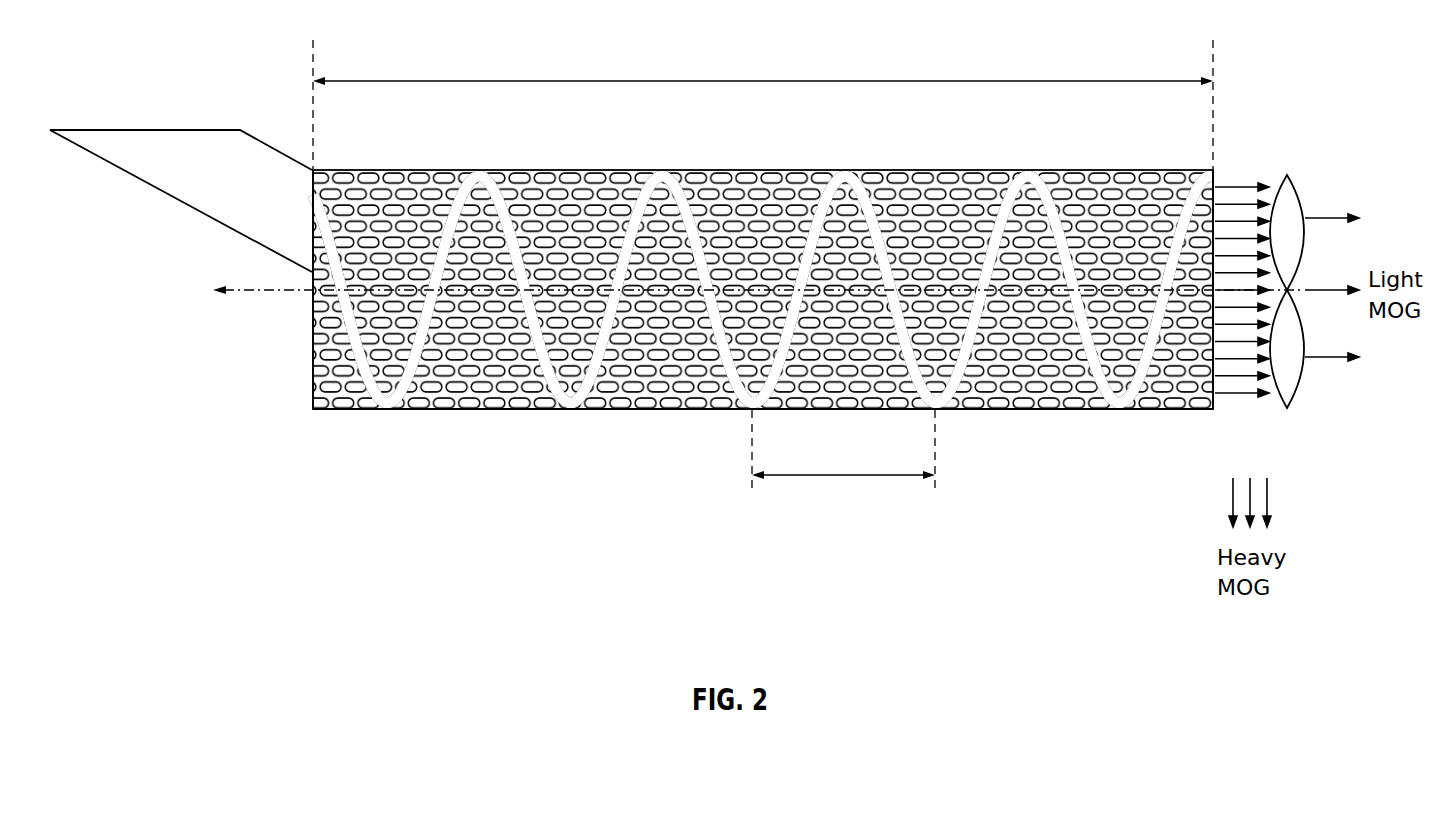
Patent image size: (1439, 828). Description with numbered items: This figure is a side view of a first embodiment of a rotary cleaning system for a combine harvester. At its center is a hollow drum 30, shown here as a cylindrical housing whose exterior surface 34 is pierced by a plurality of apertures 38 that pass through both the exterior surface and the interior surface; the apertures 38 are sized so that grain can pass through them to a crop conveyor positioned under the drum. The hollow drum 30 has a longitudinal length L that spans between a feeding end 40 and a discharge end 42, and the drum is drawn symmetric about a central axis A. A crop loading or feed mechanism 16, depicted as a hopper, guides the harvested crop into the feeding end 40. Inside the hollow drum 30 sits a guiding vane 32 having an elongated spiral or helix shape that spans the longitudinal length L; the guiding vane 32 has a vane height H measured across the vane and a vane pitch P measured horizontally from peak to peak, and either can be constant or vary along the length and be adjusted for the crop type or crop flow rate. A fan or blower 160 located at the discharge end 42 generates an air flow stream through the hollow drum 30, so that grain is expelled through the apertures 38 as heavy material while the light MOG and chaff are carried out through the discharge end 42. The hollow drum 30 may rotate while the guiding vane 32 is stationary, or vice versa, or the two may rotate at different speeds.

The crop loading or feed mechanism 16 is at (145, 130).
The hollow drum 30 is at (1110, 170).
The guiding vane 32 is at (950, 408).
The exterior surface 34 is at (1190, 410).
The plurality of apertures 38 is at (770, 245).
The feeding end 40 is at (312, 404).
The discharge end 42 is at (1215, 405).
The fan or blower 160 is at (1287, 176).
The longitudinal axis A is at (247, 291).
The longitudinal length L is at (763, 105).
The vane pitch P is at (843, 457).
The vane height H is at (483, 250).